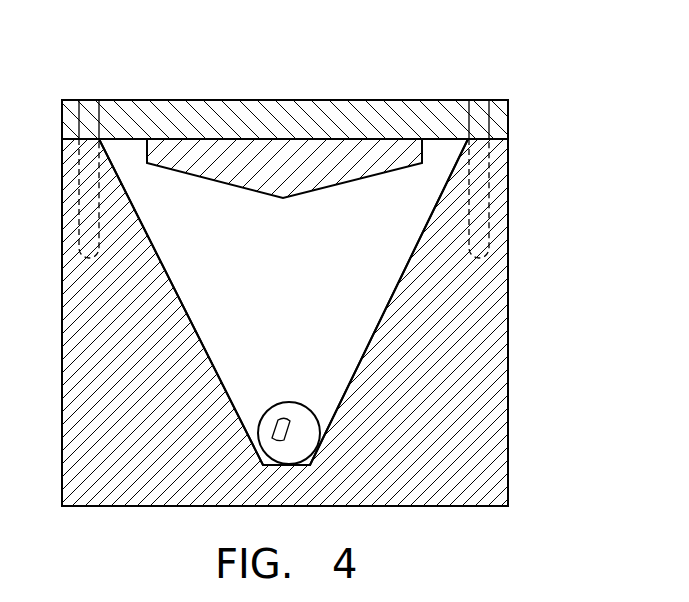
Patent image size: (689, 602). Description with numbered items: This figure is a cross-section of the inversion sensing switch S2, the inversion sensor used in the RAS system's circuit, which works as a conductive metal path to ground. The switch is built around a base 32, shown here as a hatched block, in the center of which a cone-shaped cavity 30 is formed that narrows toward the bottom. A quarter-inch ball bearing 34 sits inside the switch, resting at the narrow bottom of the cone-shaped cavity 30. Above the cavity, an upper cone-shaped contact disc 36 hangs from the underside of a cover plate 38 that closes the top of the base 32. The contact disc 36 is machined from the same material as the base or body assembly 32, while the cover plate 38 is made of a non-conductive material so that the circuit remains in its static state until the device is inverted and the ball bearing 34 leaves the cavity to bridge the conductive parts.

The cone-shaped cavity 30 is at (402, 280).
The base 32 is at (508, 338).
The ball bearing 34 is at (290, 402).
The upper cone-shaped contact disc 36 is at (244, 196).
The cover plate 38 is at (306, 100).
The inversion sensing switch S2 is at (542, 65).